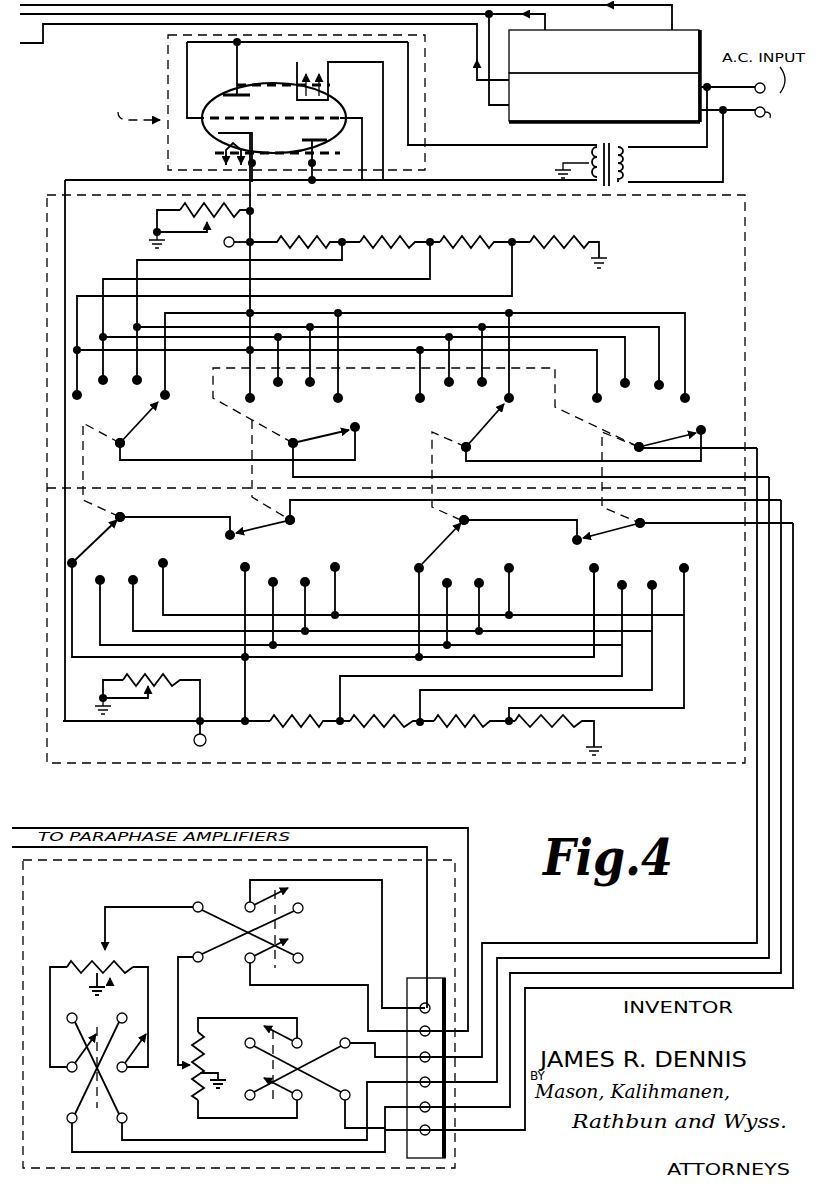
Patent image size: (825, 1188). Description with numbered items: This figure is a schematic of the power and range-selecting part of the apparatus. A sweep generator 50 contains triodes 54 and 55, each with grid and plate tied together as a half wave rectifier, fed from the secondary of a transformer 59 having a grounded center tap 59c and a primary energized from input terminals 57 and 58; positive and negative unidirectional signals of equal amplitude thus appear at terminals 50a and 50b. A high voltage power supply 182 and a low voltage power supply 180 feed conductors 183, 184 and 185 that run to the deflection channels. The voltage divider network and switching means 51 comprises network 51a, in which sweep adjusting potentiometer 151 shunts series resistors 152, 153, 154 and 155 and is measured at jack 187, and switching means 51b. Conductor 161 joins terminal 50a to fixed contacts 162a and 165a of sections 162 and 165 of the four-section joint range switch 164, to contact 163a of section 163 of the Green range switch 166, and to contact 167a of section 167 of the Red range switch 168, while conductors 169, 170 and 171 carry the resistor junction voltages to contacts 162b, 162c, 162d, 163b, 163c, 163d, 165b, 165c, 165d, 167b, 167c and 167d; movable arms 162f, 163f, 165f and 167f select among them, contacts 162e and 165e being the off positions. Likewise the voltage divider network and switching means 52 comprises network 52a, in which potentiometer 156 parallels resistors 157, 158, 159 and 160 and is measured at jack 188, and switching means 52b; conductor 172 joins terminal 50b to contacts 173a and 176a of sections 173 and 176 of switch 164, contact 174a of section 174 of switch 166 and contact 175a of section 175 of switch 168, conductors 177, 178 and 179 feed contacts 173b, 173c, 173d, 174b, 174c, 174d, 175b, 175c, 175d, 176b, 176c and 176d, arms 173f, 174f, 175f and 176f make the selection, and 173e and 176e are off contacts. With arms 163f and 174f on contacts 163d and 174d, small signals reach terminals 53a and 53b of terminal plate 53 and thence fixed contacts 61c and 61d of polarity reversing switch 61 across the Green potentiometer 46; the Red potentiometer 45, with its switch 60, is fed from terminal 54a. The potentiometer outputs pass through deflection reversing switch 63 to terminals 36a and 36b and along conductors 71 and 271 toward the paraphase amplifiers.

The high voltage power supply 182 is at (702, 36).
The conductor 183 is at (100, 24).
The conductor 184 is at (62, 42).
The conductor 185 is at (144, 25).
The low voltage power supply 180 is at (507, 117).
The input terminal 57 is at (756, 85).
The input terminal 58 is at (734, 122).
The transformer 59 is at (612, 146).
The center tap 59c is at (562, 163).
The triode 54 is at (227, 86).
The triode 55 is at (352, 94).
The positive terminal 50a is at (252, 158).
The negative terminal 50b is at (318, 163).
The sweep generator 50 is at (227, 102).
The sweep adjusting potentiometer 151 is at (180, 205).
The jack 187 is at (238, 232).
The resistor 155 is at (305, 236).
The resistor 154 is at (405, 236).
The resistor 153 is at (487, 236).
The resistor 152 is at (577, 236).
The voltage divider network and switching means 51 is at (491, 208).
The voltage divider network 51a is at (622, 238).
The switching means 51b is at (618, 283).
The conductor 171 is at (540, 355).
The conductor 170 is at (590, 325).
The conductor 169 is at (636, 320).
The conductor 161 is at (680, 320).
The joint range switch 164 is at (700, 328).
The switch section 167 is at (219, 459).
The fixed contact 167a is at (158, 415).
The fixed contact 167b is at (145, 385).
The fixed contact 167c is at (118, 375).
The fixed contact 167d is at (72, 398).
The movable arm 167f is at (128, 446).
The Red range switch 168 is at (76, 460).
The switch section 165 is at (491, 444).
The fixed contact 165a is at (334, 404).
The fixed contact 165b is at (318, 383).
The fixed contact 165c is at (273, 378).
The fixed contact 165d is at (245, 395).
The off contact 165e is at (358, 440).
The movable arm 165f is at (298, 447).
The switch section 163 is at (566, 463).
The fixed contact 163a is at (520, 405).
The fixed contact 163b is at (488, 384).
The fixed contact 163c is at (443, 380).
The fixed contact 163d is at (415, 400).
The movable arm 163f is at (494, 442).
The Green range switch 166 is at (450, 460).
The switch section 162 is at (679, 469).
The fixed contact 162a is at (690, 395).
The fixed contact 162b is at (665, 382).
The fixed contact 162c is at (620, 378).
The fixed contact 162d is at (594, 401).
The off contact 162e is at (706, 428).
The movable arm 162f is at (648, 445).
The switch section 175 is at (151, 537).
The fixed contact 175a is at (92, 550).
The stationary contact 175b is at (103, 586).
The stationary contact 175c is at (140, 582).
The stationary contact 175d is at (182, 545).
The movable arm 175f is at (113, 517).
The switch section 176 is at (508, 524).
The fixed contact 176a is at (241, 571).
The stationary contact 176b is at (268, 586).
The stationary contact 176c is at (310, 586).
The stationary contact 176d is at (340, 567).
The off contact 176e is at (229, 542).
The movable arm 176f is at (258, 522).
The switch section 174 is at (499, 539).
The fixed contact 174a is at (411, 563).
The stationary contact 174b is at (443, 588).
The stationary contact 174c is at (484, 588).
The fixed contact 174d is at (514, 572).
The movable arm 174f is at (456, 520).
The switch section 173 is at (688, 537).
The fixed contact 173a is at (589, 570).
The stationary contact 173b is at (618, 589).
The stationary contact 173c is at (658, 587).
The stationary contact 173d is at (690, 569).
The off contact 173e is at (580, 547).
The movable arm 173f is at (612, 528).
The conductor 172 is at (325, 657).
The conductor 177 is at (565, 650).
The conductor 178 is at (640, 633).
The conductor 179 is at (668, 616).
The sweep adjusting potentiometer 156 is at (162, 690).
The jack 188 is at (194, 744).
The voltage divider network 52a is at (168, 729).
The switching means 52b is at (660, 715).
The resistor 160 is at (306, 712).
The resistor 159 is at (382, 714).
The resistor 158 is at (483, 714).
The resistor 157 is at (580, 726).
The voltage divider network and switching means 52 is at (464, 754).
The conductor 71 is at (336, 828).
The conductor 271 is at (432, 828).
The deflection reversing switch 63 is at (232, 903).
The Red potentiometer 45 is at (99, 1014).
The reversing switch 60 is at (80, 1083).
The Green potentiometer 46 is at (190, 1063).
The polarity reversing switch 61 is at (313, 1046).
The fixed contact 61c is at (377, 1058).
The fixed contact 61d is at (338, 1105).
The terminal 36a is at (423, 1002).
The connector terminal 36b is at (419, 1030).
The terminal 53a is at (420, 1056).
The terminal 54a is at (419, 1106).
The terminal 53b is at (440, 1134).
The terminal plate 53 is at (437, 1150).